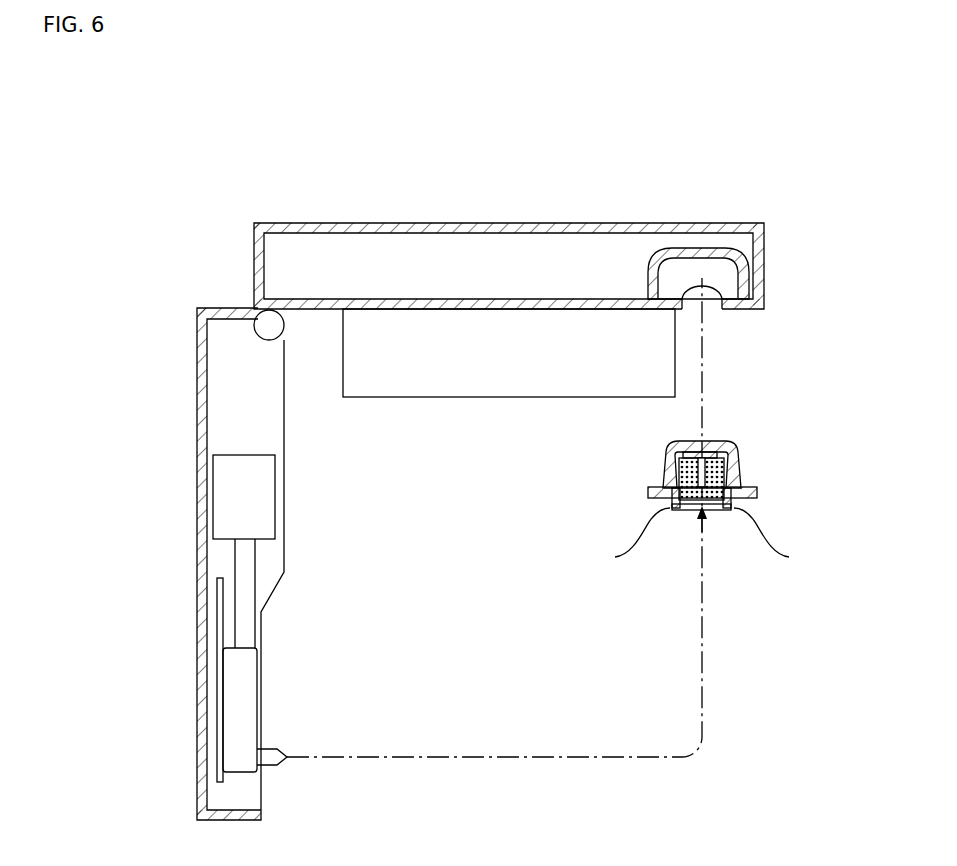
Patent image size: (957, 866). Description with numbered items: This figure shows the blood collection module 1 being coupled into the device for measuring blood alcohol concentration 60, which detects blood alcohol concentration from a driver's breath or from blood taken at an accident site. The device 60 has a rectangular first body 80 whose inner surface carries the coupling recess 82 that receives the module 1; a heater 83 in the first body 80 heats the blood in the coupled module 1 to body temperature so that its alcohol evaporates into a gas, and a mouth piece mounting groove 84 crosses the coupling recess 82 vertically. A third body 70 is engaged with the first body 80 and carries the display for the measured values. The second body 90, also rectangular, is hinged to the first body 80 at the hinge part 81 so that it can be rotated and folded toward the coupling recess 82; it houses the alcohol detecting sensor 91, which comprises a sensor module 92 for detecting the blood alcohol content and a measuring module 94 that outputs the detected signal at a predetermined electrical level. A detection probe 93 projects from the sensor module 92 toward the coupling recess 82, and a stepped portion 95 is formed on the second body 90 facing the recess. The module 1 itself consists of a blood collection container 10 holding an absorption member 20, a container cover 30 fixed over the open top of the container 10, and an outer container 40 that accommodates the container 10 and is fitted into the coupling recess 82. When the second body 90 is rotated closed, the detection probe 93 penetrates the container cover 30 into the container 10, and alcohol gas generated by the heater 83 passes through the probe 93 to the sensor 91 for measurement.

The blood collection module 1 is at (734, 498).
The blood collection container 10 is at (622, 555).
The absorption member 20 is at (718, 472).
The container cover 30 is at (782, 555).
The outer container 40 is at (742, 453).
The device for measuring blood alcohol concentration 60 is at (604, 214).
The third body 70 is at (575, 375).
The first body 80 is at (488, 228).
The hinge part 81 is at (266, 322).
The coupling recess 82 is at (740, 278).
The heater 83 is at (697, 248).
The mouth piece mounting groove 84 is at (705, 312).
The second body 90 is at (197, 428).
The alcohol detecting sensor 91 is at (168, 618).
The sensor module 92 is at (112, 587).
The detection probe 93 is at (287, 757).
The measuring module 94 is at (225, 522).
The stepped portion 95 is at (259, 660).